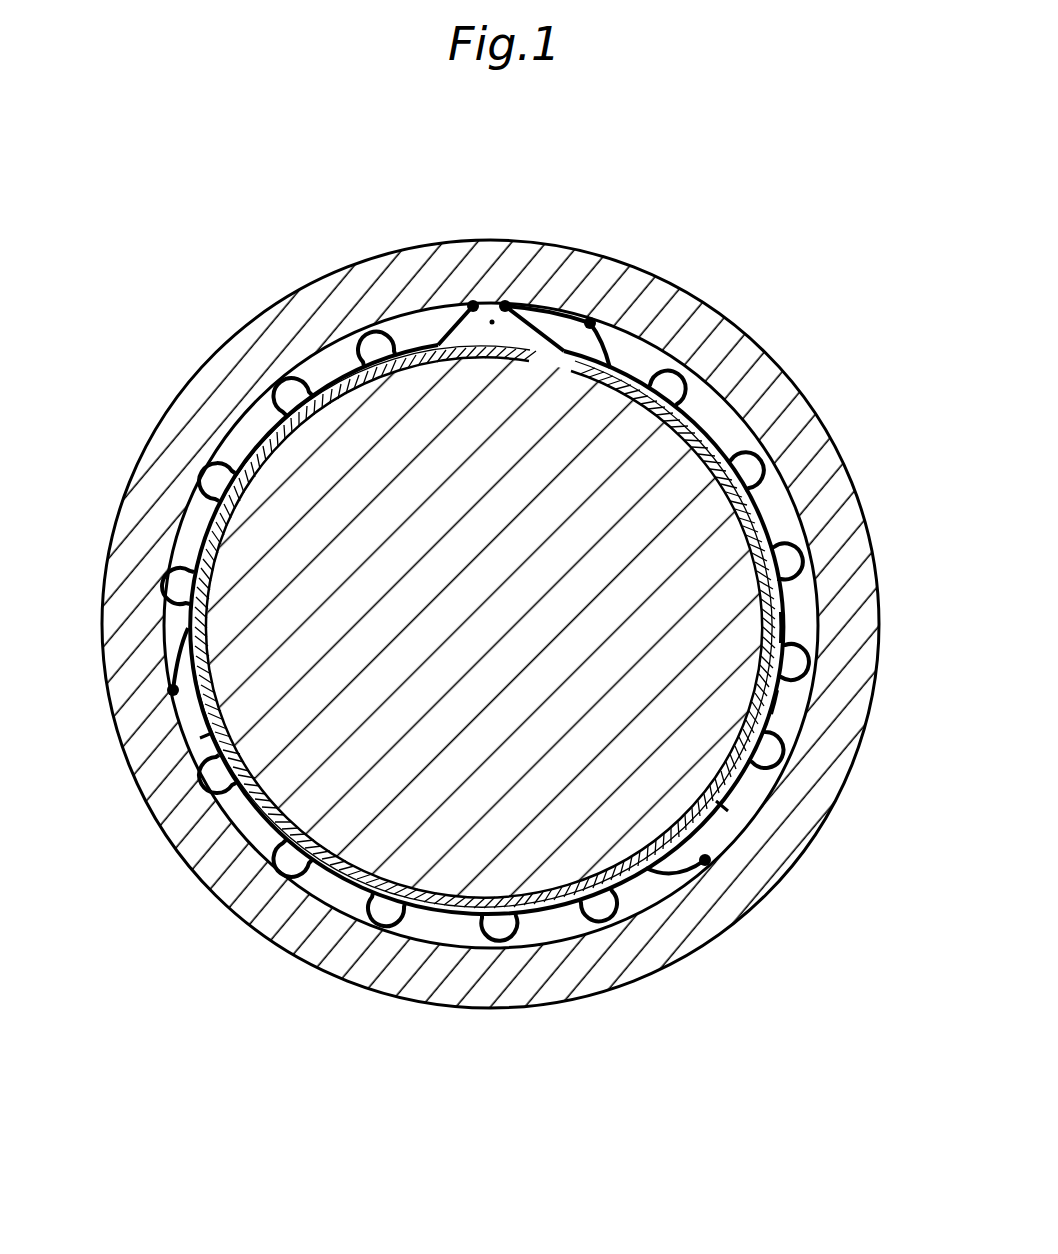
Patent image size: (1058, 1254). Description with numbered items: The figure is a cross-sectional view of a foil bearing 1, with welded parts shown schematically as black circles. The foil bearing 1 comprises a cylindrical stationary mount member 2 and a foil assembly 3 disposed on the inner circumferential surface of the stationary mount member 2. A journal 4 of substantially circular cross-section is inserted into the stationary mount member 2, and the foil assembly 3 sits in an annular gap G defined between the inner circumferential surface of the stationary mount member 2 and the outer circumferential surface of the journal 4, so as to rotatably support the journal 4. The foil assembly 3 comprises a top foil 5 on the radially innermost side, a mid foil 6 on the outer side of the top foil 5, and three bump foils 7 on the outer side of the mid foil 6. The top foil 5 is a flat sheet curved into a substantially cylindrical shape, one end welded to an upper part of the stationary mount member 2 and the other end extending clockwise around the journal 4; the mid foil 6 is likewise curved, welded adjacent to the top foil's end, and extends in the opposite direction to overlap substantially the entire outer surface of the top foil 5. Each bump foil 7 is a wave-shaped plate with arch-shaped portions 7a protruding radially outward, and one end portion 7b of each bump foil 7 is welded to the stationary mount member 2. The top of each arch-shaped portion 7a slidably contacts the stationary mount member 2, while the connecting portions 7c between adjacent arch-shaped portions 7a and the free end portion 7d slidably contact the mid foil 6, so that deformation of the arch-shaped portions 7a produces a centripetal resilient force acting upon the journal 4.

The foil bearing 1 is at (618, 235).
The stationary mount member 2 is at (257, 318).
The foil assembly 3 is at (778, 277).
The journal 4 is at (735, 540).
The top foil 5 is at (668, 373).
The mid foil 6 is at (692, 392).
The bump foil 7 is at (500, 647).
The arch-shaped portion 7a is at (805, 655).
The end portion 7b is at (615, 330).
The connecting portion 7c is at (800, 610).
The free end portion 7d is at (725, 815).
The annular gap G is at (492, 320).